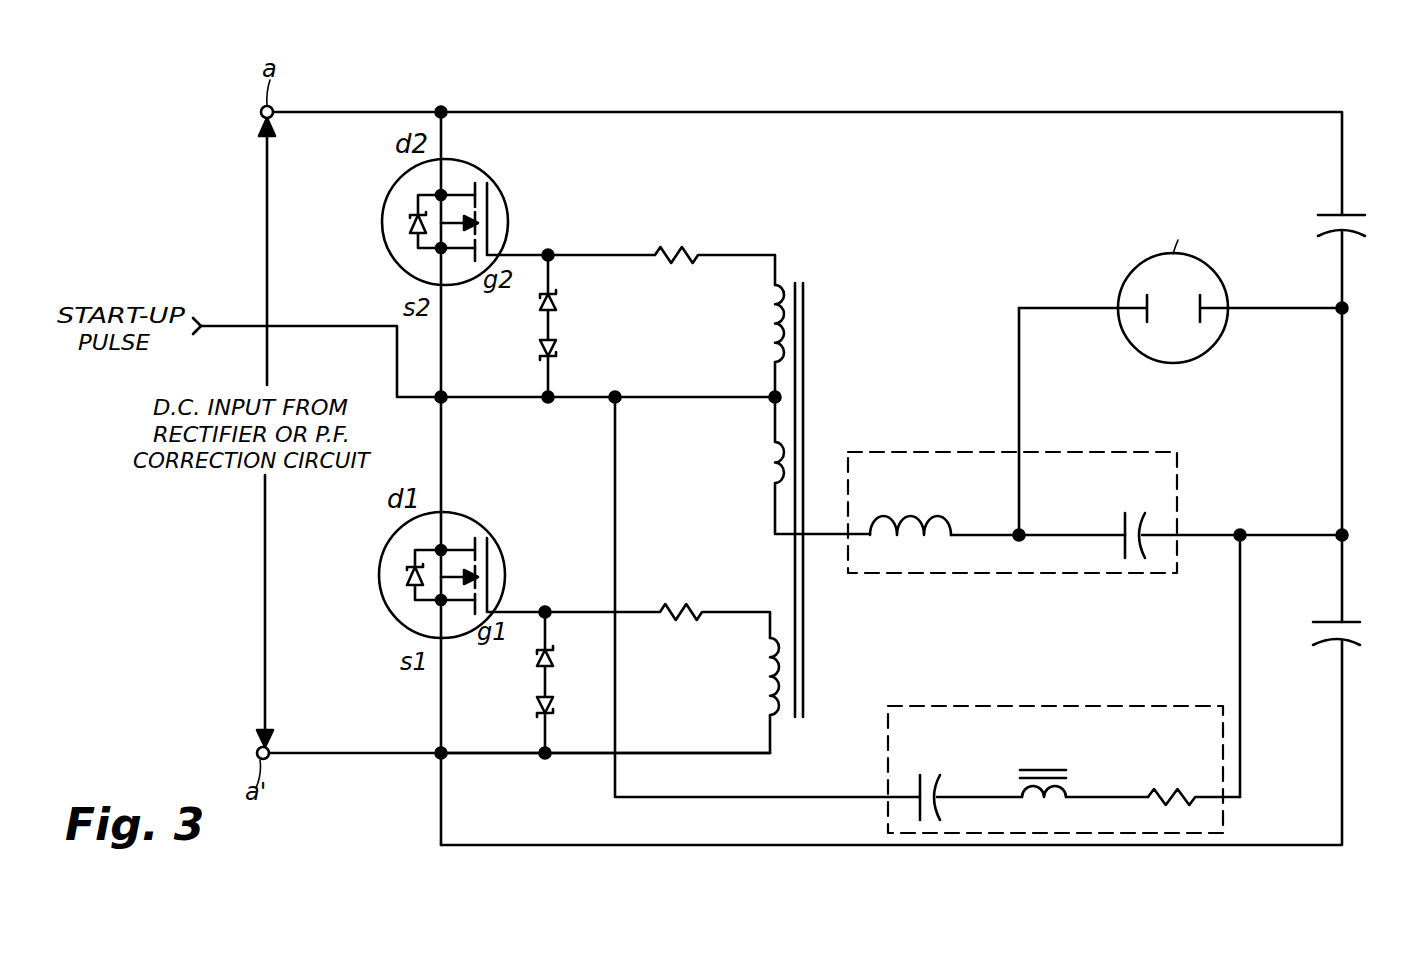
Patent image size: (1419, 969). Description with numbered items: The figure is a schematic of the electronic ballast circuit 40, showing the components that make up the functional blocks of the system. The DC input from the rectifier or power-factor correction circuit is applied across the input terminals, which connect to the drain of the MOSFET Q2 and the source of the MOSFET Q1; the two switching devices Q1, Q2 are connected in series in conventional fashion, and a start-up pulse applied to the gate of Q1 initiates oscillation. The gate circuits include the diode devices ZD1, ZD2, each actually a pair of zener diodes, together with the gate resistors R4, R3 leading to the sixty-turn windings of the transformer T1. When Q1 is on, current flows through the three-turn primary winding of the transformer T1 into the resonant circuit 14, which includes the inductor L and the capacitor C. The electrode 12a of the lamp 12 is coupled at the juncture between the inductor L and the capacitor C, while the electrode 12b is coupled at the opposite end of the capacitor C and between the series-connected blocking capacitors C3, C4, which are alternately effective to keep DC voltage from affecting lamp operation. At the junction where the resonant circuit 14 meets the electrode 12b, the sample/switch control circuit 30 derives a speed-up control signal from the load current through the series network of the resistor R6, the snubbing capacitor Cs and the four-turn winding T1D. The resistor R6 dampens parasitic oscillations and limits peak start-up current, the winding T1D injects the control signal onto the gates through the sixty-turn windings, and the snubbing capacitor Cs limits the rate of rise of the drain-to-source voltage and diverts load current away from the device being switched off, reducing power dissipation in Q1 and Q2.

The electronic ballast circuit 40 is at (806, 47).
The lamp 12 is at (1180, 301).
The electrode 12a is at (1145, 328).
The electrode 12b is at (1204, 320).
The resonant circuit 14 is at (1095, 480).
The sample/switch control circuit 30 is at (1064, 738).
The MOSFET switching device Q1 is at (486, 533).
The MOSFET switching device Q2 is at (506, 198).
The gate resistor R3 is at (678, 608).
The gate resistor R4 is at (679, 250).
The resistor R6 is at (1164, 788).
The blocking capacitor C3 is at (1361, 223).
The blocking capacitor C4 is at (1356, 622).
The capacitor C is at (1136, 512).
The inductor L is at (913, 512).
The snubbing capacitor Cs is at (925, 776).
The transformer T1 is at (834, 262).
The four-turn transformer winding T1D is at (1039, 786).
The diode device ZD1 is at (544, 324).
The diode device ZD2 is at (541, 683).